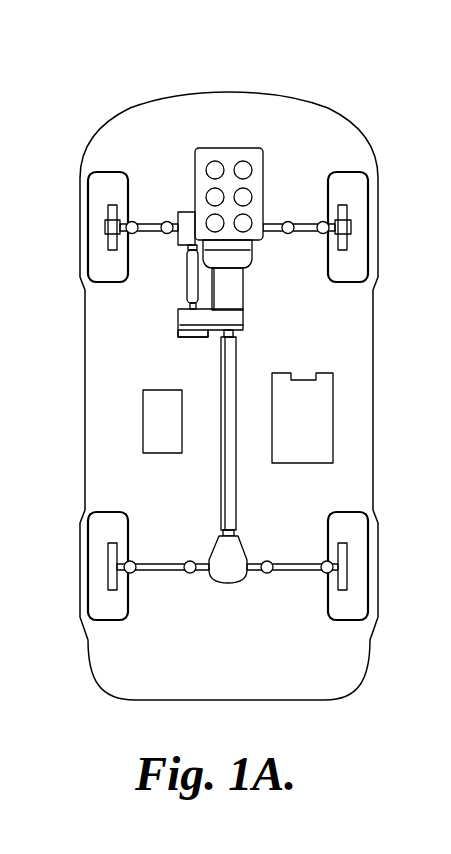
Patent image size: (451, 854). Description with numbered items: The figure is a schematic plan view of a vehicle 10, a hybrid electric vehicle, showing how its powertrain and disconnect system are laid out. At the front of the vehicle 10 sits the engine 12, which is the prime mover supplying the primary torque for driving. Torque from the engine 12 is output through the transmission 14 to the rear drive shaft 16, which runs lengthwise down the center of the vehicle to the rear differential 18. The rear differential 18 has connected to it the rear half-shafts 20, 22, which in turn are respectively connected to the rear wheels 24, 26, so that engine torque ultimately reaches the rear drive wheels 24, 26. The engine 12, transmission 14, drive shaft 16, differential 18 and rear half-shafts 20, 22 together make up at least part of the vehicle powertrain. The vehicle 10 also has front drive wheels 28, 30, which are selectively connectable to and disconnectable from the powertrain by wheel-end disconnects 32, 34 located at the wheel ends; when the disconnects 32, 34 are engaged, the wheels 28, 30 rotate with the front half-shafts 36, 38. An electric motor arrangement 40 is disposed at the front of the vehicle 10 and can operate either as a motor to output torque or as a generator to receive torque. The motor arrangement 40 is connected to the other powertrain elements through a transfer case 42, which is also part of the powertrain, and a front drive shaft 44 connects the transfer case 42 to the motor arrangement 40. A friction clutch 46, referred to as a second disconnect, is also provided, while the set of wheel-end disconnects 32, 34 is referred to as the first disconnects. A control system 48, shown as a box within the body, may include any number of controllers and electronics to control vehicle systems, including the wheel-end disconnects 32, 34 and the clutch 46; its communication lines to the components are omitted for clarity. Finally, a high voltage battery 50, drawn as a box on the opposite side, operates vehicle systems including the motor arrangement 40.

The vehicle 10 is at (88, 68).
The engine 12 is at (236, 148).
The transmission 14 is at (245, 306).
The rear drive shaft 16 is at (221, 493).
The rear differential 18 is at (228, 584).
The rear half-shaft 20 is at (153, 572).
The rear half-shaft 22 is at (292, 564).
The rear wheel 24 is at (110, 619).
The rear wheel 26 is at (347, 619).
The front drive wheel 28 is at (103, 283).
The front drive wheel 30 is at (348, 282).
The wheel-end disconnect 32 is at (104, 228).
The wheel-end disconnect 34 is at (365, 227).
The front half-shaft 36 is at (147, 223).
The front half-shaft 38 is at (306, 223).
The electric motor arrangement 40 is at (180, 246).
The transfer case 42 is at (243, 318).
The front drive shaft 44 is at (186, 290).
The friction clutch 46 is at (195, 340).
The control system 48 is at (163, 456).
The high voltage battery 50 is at (335, 428).